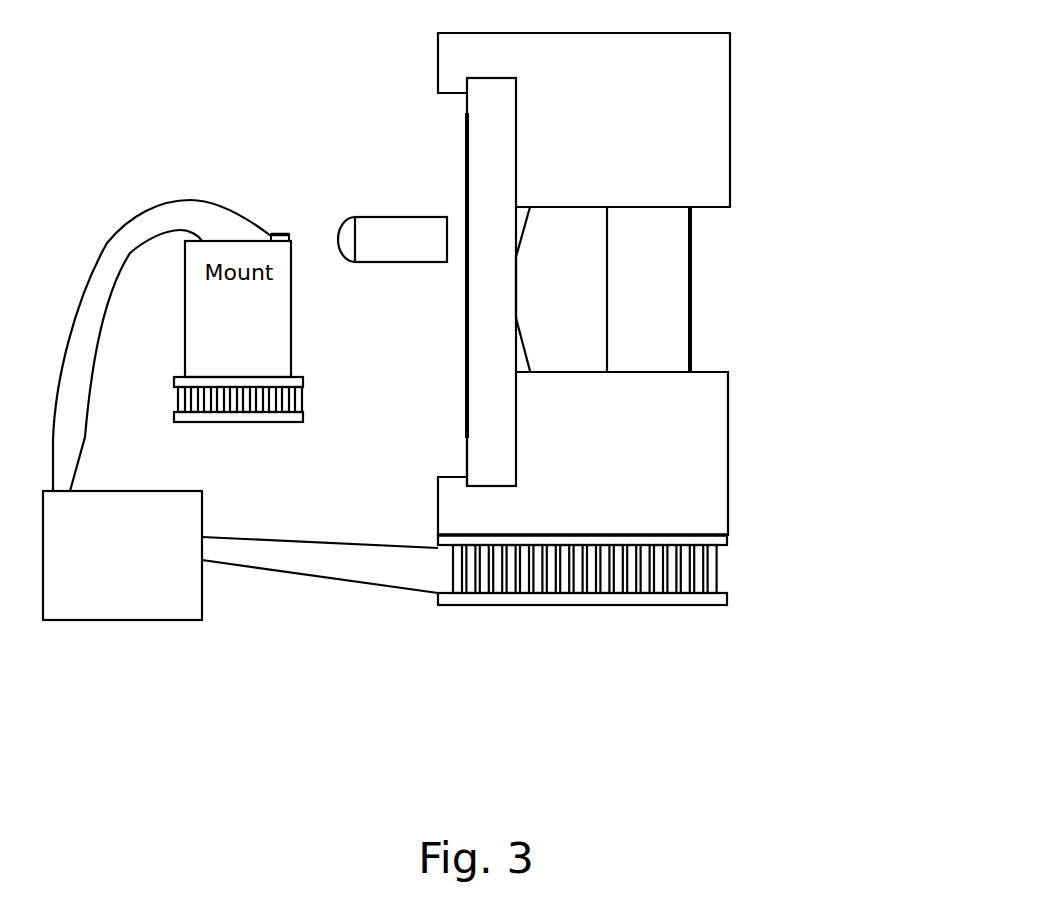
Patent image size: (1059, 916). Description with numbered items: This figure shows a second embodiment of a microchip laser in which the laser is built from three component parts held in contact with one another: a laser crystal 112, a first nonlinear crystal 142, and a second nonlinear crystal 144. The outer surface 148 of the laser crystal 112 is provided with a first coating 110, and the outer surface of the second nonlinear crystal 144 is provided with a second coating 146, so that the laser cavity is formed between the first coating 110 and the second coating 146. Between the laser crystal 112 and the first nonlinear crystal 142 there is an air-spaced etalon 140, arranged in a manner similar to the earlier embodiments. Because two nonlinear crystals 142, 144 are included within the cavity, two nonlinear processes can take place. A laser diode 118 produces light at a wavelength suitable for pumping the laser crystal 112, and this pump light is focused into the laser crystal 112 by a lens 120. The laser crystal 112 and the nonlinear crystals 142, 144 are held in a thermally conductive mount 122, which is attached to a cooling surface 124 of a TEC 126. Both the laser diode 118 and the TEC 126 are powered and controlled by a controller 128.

The first coating 110 is at (465, 175).
The laser crystal 112 is at (497, 99).
The laser diode 118 is at (280, 233).
The lens 120 is at (423, 252).
The thermally conductive mount 122 is at (672, 65).
The cooling surface 124 is at (690, 532).
The TEC 126 is at (703, 573).
The controller 128 is at (240, 555).
The air-spaced etalon 140 is at (520, 220).
The first nonlinear crystal 142 is at (550, 222).
The second nonlinear crystal 144 is at (654, 270).
The second coating 146 is at (693, 320).
The outer surface 148 is at (467, 455).